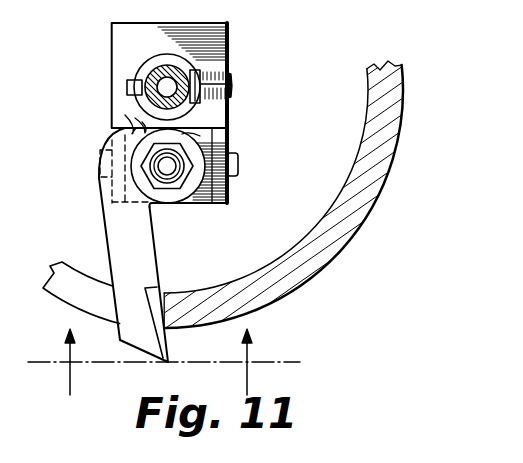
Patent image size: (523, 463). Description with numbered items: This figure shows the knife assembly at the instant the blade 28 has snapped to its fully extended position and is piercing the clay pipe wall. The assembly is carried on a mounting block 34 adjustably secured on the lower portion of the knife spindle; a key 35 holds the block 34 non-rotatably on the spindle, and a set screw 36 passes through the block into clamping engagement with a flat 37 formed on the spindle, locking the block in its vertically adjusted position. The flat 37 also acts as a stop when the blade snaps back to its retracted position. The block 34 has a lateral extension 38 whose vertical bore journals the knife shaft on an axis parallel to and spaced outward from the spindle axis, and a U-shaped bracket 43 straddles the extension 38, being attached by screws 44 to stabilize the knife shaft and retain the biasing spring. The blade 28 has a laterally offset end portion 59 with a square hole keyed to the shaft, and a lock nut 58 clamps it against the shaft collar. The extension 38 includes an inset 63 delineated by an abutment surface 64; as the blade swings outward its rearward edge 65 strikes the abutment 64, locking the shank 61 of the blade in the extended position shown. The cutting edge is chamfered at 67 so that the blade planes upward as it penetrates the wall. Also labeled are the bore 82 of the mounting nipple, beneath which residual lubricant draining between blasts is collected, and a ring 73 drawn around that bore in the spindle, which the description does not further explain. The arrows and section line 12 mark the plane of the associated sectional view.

The mounting block 34 is at (228, 44).
The bushing 73 is at (152, 68).
The bore of the mounting nipple 82 is at (168, 85).
The key 35 is at (130, 81).
The set screw 36 is at (233, 87).
The flat 37 is at (202, 100).
The abutment surface 64 is at (125, 115).
The rearward edge of the blade 65 is at (135, 118).
The lateral extension 38 is at (198, 205).
The inset 63 is at (205, 155).
The laterally offset end portion 59 is at (200, 146).
The U-shaped bracket 43 is at (227, 188).
The screws 44 is at (238, 170).
The lock nut 58 is at (157, 177).
The shank of the blade 61 is at (100, 230).
The blade 28 is at (118, 251).
The chamfer 67 is at (160, 343).
The section line 12- 12 is at (162, 363).